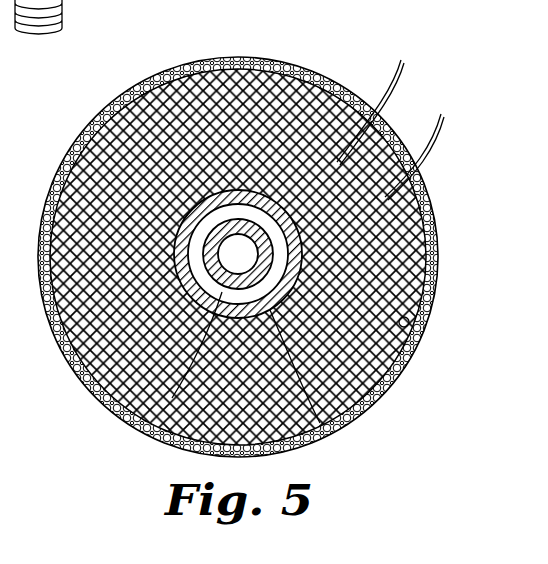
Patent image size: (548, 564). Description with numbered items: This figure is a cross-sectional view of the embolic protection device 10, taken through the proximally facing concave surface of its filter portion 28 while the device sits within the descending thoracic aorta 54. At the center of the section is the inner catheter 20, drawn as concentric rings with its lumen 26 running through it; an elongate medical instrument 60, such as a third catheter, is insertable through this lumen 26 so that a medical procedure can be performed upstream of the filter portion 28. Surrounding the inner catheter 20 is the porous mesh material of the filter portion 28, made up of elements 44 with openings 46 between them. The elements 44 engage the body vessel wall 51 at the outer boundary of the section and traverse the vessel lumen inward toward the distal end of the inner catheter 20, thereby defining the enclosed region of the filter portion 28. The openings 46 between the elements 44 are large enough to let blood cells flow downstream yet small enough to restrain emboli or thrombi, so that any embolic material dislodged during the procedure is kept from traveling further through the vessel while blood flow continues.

The embolic protection device 10 is at (90, 0).
The inner catheter 20 is at (331, 432).
The lumen 26 is at (235, 212).
The filter portion 28 is at (307, 80).
The elements 44 is at (374, 102).
The openings 46 is at (419, 146).
The body vessel wall 51 is at (407, 326).
The descending thoracic aorta 54 is at (67, 153).
The elongate medical instrument 60 is at (140, 429).